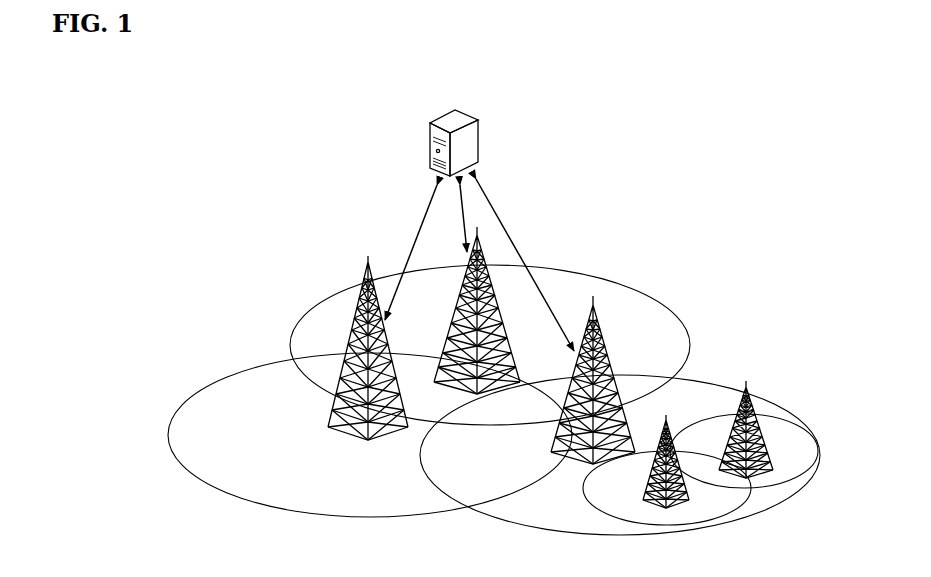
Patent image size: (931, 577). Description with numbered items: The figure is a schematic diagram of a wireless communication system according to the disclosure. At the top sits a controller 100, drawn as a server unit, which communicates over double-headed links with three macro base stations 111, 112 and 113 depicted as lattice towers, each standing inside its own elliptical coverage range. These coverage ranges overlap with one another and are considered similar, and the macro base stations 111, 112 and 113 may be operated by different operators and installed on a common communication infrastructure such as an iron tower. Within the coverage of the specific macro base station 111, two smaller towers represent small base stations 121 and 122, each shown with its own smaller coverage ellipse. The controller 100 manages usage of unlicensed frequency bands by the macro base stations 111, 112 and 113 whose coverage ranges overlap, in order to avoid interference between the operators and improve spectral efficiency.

The controller 100 is at (469, 142).
The macro base station 111 is at (593, 380).
The macro base station 112 is at (477, 310).
The macro base station 113 is at (368, 348).
The small base station 121 is at (662, 461).
The small base station 122 is at (743, 429).